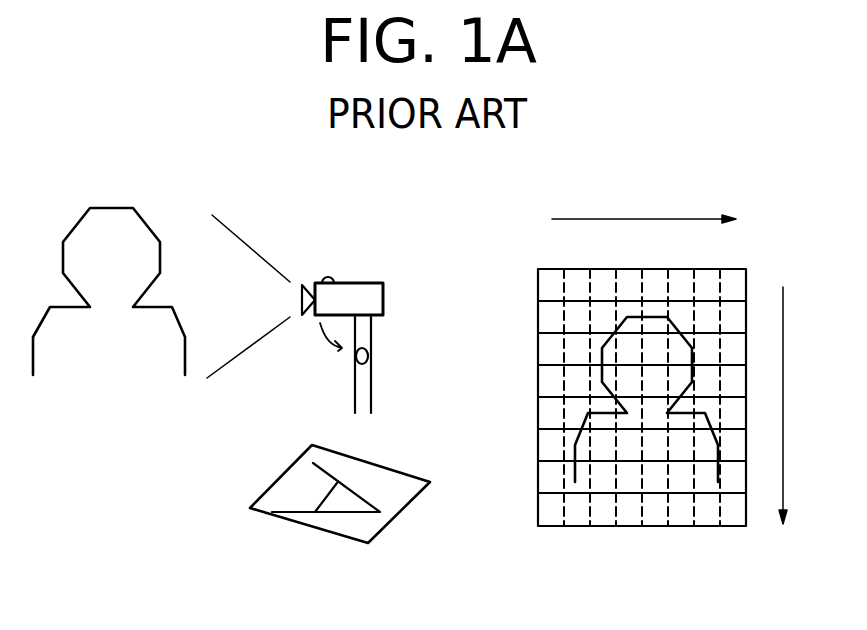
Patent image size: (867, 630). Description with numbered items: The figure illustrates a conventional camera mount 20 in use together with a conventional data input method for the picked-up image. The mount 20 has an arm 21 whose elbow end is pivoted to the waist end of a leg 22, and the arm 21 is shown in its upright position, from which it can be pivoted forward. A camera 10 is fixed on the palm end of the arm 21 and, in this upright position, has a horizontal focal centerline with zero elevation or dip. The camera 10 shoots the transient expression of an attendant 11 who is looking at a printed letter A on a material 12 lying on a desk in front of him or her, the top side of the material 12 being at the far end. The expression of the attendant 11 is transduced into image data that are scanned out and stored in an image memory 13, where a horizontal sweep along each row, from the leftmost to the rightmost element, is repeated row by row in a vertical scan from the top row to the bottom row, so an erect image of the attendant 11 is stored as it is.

The camera 10 is at (343, 283).
The attendant 11 is at (102, 355).
The material 12 is at (295, 527).
The image memory 13 is at (557, 527).
The camera mount 20 is at (384, 344).
The arm 21 is at (372, 335).
The leg 22 is at (371, 400).